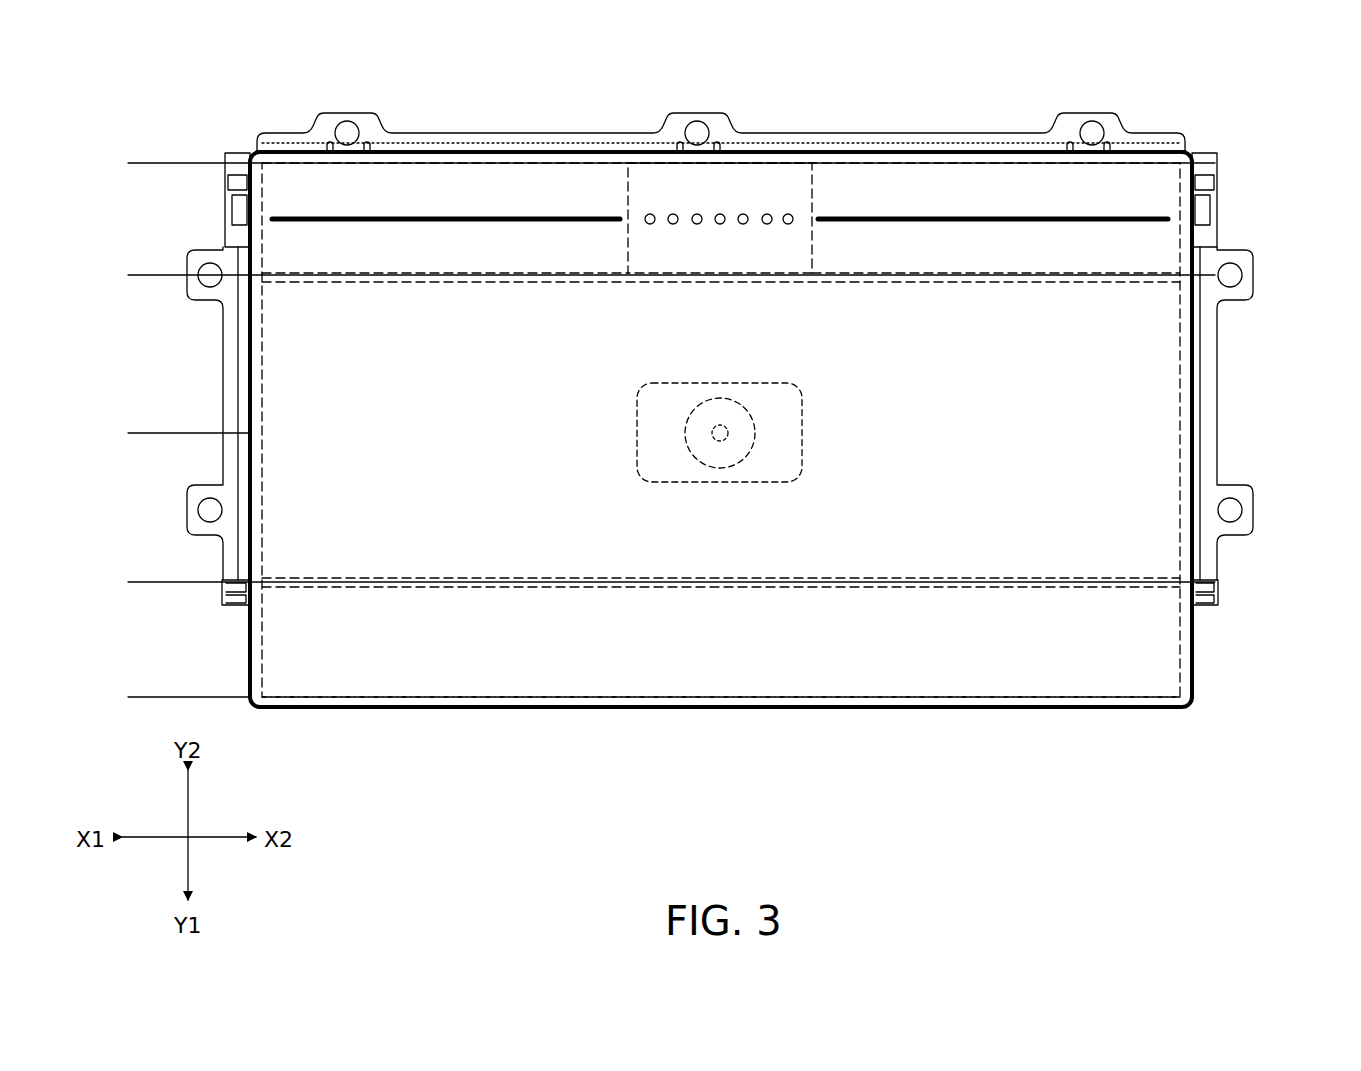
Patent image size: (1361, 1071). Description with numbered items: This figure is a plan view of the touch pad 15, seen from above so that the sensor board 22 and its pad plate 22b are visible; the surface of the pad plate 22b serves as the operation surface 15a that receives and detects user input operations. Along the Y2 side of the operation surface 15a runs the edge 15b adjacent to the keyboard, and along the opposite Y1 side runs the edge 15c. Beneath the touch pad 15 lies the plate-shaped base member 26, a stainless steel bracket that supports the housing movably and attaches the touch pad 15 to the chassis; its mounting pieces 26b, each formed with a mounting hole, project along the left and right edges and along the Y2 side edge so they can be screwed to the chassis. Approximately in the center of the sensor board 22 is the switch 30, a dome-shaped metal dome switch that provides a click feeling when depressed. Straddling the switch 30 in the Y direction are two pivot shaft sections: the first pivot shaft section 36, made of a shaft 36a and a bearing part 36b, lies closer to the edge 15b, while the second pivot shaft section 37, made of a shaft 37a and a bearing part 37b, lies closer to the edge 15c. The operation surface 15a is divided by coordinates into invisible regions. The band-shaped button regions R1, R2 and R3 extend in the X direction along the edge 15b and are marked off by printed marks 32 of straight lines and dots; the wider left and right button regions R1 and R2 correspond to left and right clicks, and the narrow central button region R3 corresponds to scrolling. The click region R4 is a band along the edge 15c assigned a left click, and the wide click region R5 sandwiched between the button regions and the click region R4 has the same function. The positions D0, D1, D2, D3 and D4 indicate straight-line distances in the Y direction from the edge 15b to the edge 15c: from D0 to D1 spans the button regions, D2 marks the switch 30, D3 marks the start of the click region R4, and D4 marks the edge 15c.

The touch pad 15 is at (162, 73).
The operation surface 15a is at (780, 670).
The edge 15b is at (595, 160).
The edge 15c is at (567, 708).
The sensor board 22 is at (1133, 385).
The pad plate 22b is at (721, 542).
The base member 26 is at (1218, 418).
The mounting pieces 26b is at (365, 120).
The switch 30 is at (748, 410).
The marks 32 is at (520, 222).
The pivot shaft section 36 is at (104, 188).
The shaft 36a is at (238, 182).
The bearing part 36b is at (238, 206).
The pivot shaft section 37 is at (112, 605).
The shaft 37a is at (244, 604).
The bearing part 37b is at (232, 594).
The button region R1 is at (472, 162).
The button region R2 is at (950, 162).
The button region R3 is at (765, 165).
The click region R4 is at (660, 697).
The click region R5 is at (900, 582).
The distance reference position D0 is at (651, 162).
The distance reference position D1 is at (651, 276).
The distance reference position D2 is at (169, 433).
The distance reference position D3 is at (651, 582).
The distance reference position D4 is at (169, 697).